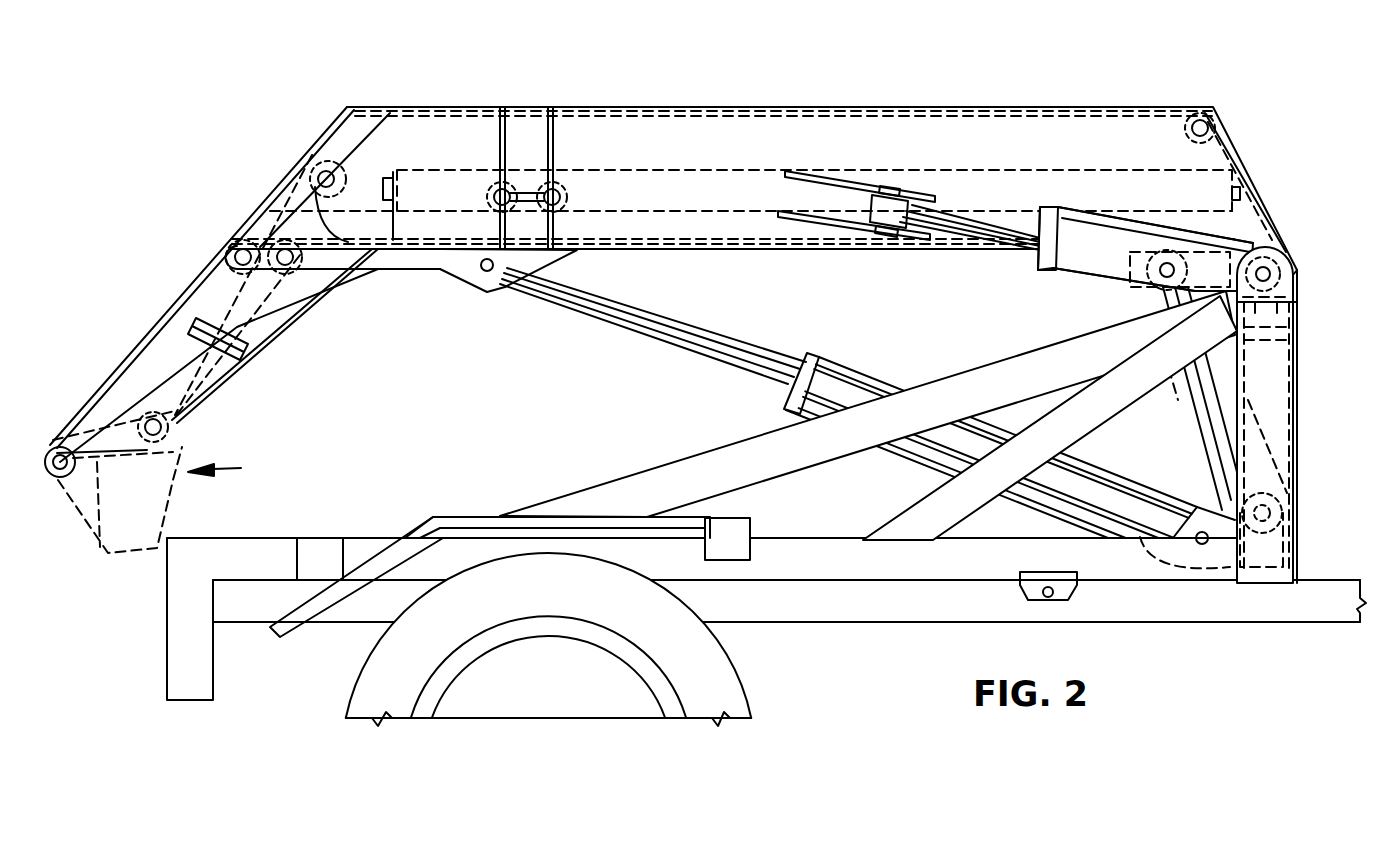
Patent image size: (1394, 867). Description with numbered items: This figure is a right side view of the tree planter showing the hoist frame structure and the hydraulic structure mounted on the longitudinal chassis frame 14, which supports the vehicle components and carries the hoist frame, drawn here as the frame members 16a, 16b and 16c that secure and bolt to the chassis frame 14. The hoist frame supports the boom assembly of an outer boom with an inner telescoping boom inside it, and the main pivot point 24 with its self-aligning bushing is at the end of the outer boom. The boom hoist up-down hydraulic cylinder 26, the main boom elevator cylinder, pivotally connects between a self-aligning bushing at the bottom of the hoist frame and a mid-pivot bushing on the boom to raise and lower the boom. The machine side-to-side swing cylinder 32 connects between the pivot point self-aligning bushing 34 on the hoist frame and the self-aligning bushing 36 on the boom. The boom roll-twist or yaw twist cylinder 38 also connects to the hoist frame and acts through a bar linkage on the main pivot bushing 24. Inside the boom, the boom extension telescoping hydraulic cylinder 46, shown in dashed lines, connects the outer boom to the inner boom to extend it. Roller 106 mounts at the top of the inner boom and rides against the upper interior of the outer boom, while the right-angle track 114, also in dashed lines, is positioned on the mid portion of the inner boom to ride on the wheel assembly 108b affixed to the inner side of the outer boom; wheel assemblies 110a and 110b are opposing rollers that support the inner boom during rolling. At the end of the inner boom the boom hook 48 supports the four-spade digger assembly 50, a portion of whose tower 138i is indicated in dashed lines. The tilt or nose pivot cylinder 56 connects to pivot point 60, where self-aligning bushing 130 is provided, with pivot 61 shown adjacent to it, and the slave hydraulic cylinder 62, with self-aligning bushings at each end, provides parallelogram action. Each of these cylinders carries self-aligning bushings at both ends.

The longitudinal chassis frame 14 is at (853, 663).
The lower pivot bracket 16a is at (1300, 508).
The lift arm 16b is at (1093, 433).
The lift arm 16c is at (973, 370).
The first self-aligning bushing 24 is at (1285, 260).
The boom hoist up-down hydraulic cylinder 26 is at (833, 370).
The machine side-side motion hydraulic cylinder 32 is at (1101, 276).
The pivot point self-aligning bushing 34 is at (1270, 274).
The self-aligning bushing 36 is at (892, 212).
The boom roll-twist hydraulic cylinder 38 is at (1290, 385).
The boom extension telescoping hydraulic cylinder 46 is at (1013, 171).
The boom hook 48 is at (263, 352).
The four-spade digger assembly 50 is at (230, 470).
The tilt hydraulic cylinder 56 is at (281, 279).
The pivot point 60 is at (140, 427).
The pivot 61 is at (50, 456).
The hydraulic cylinder 62 is at (1210, 455).
The roller 106 is at (1212, 122).
The wheel assembly 108b is at (567, 195).
The wheel assembly 110a is at (230, 256).
The wheel assembly 110b is at (294, 258).
The right-angle track 114 is at (670, 212).
The self-aligning bushing 130 is at (167, 448).
The container outline 138i is at (166, 512).